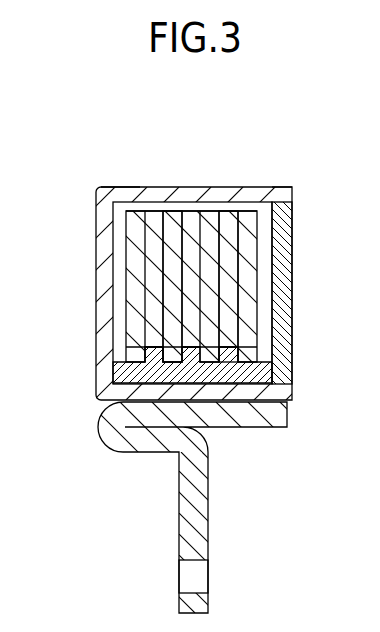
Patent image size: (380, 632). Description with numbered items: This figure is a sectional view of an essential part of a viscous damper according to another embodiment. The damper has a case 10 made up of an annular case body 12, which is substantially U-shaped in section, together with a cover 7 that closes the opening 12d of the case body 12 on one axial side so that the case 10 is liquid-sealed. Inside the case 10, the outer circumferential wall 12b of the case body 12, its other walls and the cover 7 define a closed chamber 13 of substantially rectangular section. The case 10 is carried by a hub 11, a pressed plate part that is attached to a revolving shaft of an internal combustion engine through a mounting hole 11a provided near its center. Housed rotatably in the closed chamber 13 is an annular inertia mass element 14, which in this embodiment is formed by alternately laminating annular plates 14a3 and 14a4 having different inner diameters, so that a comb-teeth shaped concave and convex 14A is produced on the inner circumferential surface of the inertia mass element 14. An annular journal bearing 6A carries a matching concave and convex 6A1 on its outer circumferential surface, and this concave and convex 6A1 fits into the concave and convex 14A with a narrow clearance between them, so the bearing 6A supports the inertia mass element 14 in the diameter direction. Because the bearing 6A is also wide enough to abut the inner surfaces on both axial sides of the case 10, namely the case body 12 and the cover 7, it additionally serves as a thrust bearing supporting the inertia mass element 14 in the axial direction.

The case 10 is at (190, 241).
The annular case body 12 is at (108, 310).
The outer circumferential wall 12b is at (118, 192).
The opening 12d is at (290, 216).
The closed chamber 13 is at (263, 257).
The inertia mass element 14 is at (199, 191).
The annular plate 14a3 is at (177, 220).
The annular plate 14a4 is at (228, 220).
The concave and convex 14A is at (158, 357).
The journal bearing 6A is at (260, 377).
The concave and convex 6A1 is at (187, 368).
The cover 7 is at (287, 297).
The hub 11 is at (197, 510).
The mounting hole 11a is at (197, 587).